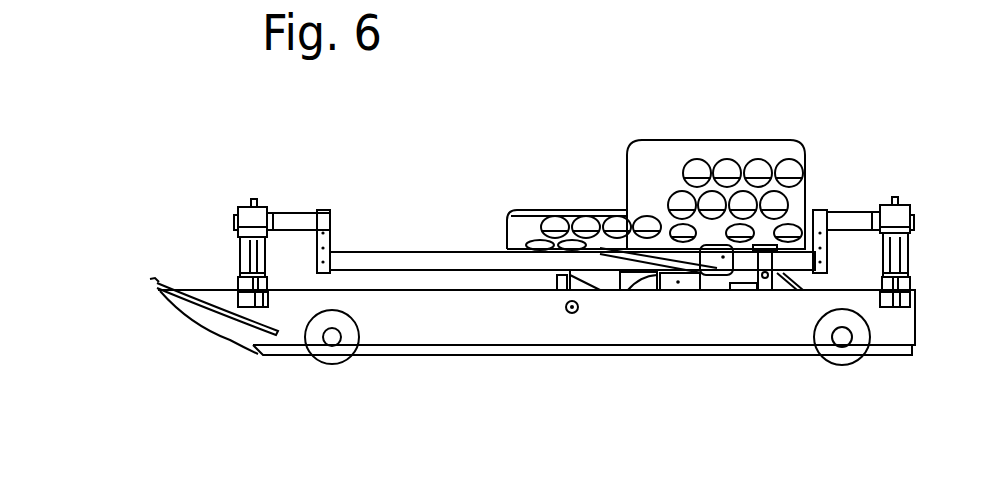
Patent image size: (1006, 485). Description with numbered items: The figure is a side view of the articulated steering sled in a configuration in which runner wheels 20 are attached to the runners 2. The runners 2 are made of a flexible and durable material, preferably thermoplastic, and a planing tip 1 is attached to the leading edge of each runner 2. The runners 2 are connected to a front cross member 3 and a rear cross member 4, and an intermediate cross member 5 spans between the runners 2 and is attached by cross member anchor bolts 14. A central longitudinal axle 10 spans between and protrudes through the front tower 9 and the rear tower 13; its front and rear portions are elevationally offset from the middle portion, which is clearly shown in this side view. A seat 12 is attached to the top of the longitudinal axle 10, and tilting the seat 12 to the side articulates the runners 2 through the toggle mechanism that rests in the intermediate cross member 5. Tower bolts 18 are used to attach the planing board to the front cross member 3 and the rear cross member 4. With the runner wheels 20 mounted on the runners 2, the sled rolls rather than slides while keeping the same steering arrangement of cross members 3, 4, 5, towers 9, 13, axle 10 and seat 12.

The planing tip 1 is at (150, 281).
The runner 2 is at (483, 328).
The front cross member 3 is at (248, 257).
The rear cross member 4 is at (910, 257).
The intermediate cross member 5 is at (583, 283).
The front tower 9 is at (248, 212).
The longitudinal axle 10 is at (425, 263).
The seat 12 is at (793, 150).
The rear tower 13 is at (900, 212).
The cross member anchor bolt 14 is at (578, 313).
The tower bolts 18 is at (254, 198).
The runner wheels 20 is at (330, 357).